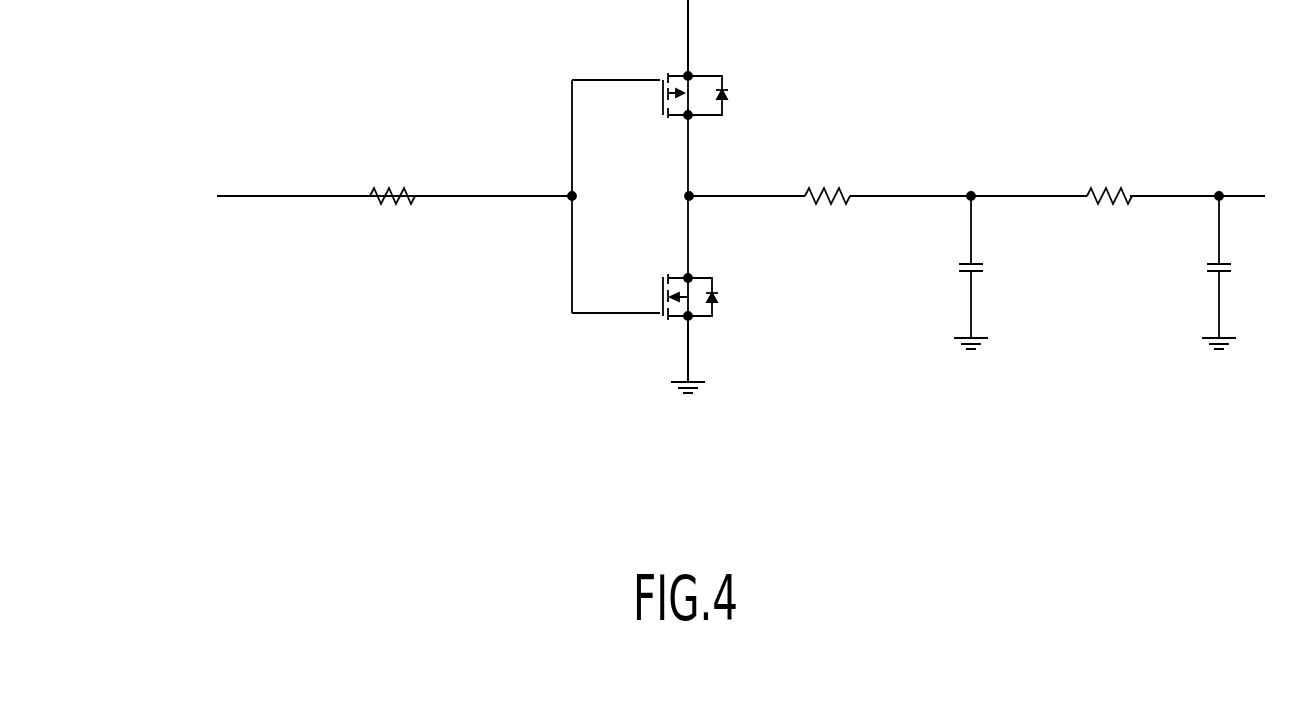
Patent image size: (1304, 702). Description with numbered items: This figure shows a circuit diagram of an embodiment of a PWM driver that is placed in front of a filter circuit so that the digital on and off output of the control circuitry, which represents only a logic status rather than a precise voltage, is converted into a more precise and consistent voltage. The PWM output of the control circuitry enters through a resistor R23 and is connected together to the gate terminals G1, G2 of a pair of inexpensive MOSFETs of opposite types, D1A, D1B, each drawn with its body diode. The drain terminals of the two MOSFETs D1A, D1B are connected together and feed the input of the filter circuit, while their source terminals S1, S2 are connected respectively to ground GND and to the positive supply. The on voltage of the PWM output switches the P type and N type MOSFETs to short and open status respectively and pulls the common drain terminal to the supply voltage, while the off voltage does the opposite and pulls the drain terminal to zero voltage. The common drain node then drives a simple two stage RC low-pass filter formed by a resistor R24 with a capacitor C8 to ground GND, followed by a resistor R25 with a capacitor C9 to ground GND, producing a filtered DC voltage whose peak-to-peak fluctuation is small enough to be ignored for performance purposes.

The resistor R23 is at (391, 216).
The resistor R24 is at (827, 213).
The resistor R25 is at (1109, 213).
The capacitor C8 is at (984, 265).
The capacitor C9 is at (1232, 265).
The first MOSFET with body diode D1A is at (717, 297).
The second MOSFET with body diode D1B is at (723, 95).
The gate of first MOSFET G1 is at (617, 312).
The gate of second MOSFET G2 is at (617, 80).
The source of first MOSFET S1 is at (701, 349).
The source of second MOSFET S2 is at (704, 38).
The ground GND is at (953, 386).